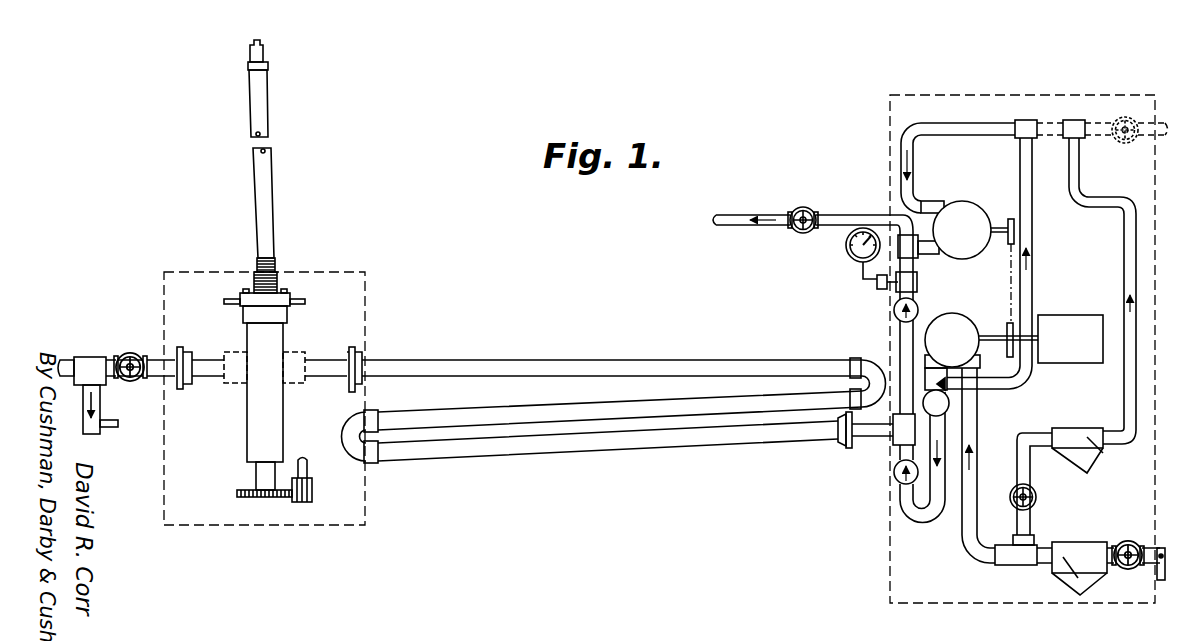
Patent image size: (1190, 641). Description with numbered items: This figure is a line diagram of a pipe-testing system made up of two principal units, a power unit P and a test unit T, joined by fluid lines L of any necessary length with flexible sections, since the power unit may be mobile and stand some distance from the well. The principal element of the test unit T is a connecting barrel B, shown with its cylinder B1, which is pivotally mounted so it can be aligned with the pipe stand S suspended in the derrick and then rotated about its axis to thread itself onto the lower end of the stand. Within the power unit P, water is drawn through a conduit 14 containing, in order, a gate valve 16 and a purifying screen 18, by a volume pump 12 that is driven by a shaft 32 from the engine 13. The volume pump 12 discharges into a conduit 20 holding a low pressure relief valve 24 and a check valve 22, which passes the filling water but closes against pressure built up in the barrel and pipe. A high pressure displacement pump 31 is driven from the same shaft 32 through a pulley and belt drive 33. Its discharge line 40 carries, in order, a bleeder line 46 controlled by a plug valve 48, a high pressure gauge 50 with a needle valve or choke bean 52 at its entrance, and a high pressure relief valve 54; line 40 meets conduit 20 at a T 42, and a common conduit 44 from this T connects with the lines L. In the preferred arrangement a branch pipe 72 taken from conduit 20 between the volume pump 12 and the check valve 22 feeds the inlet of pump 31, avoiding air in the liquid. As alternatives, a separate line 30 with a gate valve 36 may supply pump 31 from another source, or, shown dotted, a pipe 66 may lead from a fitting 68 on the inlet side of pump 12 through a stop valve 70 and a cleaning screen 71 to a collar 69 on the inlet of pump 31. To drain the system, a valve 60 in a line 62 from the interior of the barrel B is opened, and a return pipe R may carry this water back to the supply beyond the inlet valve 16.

The test unit T is at (354, 269).
The pipe stand S is at (266, 160).
The cylinder B1 is at (258, 421).
The connecting barrel B is at (258, 474).
The return pipe R is at (118, 428).
The valve 60 is at (130, 353).
The line 62 is at (158, 374).
The fluid lines L is at (627, 441).
The common conduit 44 is at (875, 428).
The T 42 is at (897, 446).
The discharge line 40 is at (898, 342).
The check valve 22 is at (896, 480).
The conduit 20 is at (904, 492).
The power unit P is at (872, 108).
The bleeder line 46 is at (852, 216).
The plug valve 48 is at (798, 233).
The high pressure gauge 50 is at (851, 256).
The needle valve or choke bean 52 is at (876, 286).
The high pressure relief valve 54 is at (892, 308).
The collar 69 is at (1073, 120).
The gate valve 36 is at (1130, 115).
The separate line 30 is at (1146, 138).
The high pressure pump 31 is at (983, 260).
The pulley and belt drive 33 is at (1008, 290).
The volume pump 12 is at (952, 314).
The shaft 32 is at (1000, 328).
The engine 13 is at (1082, 323).
The branch pipe 72 is at (1030, 380).
The low pressure relief valve 24 is at (950, 398).
The fitting 68 is at (1022, 566).
The pipe 66 is at (1031, 523).
The stop valve 70 is at (1048, 488).
The cleaning screen 71 is at (1097, 455).
The purifying screen 18 is at (1075, 578).
The gate valve 16 is at (1130, 541).
The conduit 14 is at (1158, 575).